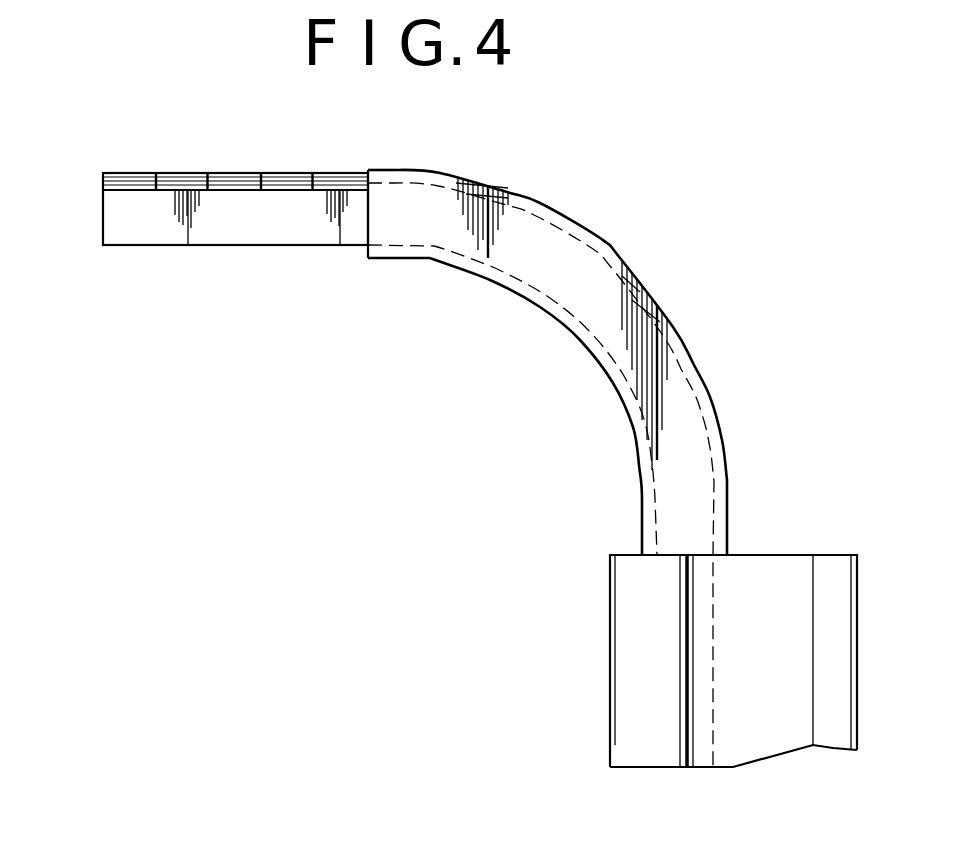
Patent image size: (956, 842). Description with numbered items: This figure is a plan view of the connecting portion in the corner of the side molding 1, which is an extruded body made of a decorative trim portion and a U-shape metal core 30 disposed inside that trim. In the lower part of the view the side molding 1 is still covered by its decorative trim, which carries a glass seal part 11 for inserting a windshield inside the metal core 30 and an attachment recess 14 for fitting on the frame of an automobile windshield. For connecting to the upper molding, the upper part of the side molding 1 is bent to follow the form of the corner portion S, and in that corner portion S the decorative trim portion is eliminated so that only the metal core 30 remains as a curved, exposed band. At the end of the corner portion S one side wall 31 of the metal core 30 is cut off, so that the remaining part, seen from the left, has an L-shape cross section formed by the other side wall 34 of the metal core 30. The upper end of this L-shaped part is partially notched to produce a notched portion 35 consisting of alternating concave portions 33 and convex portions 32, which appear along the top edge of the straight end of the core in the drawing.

The side molding 1 is at (694, 773).
The glass seal part 11 is at (634, 632).
The attachment recess 14 is at (758, 576).
The metal core 30 is at (547, 468).
The side wall 31 is at (366, 212).
The convex portions 32 is at (112, 172).
The concave portions 33 is at (177, 172).
The other side wall 34 is at (232, 236).
The notched portion 35 is at (209, 208).
The corner portion S is at (546, 325).